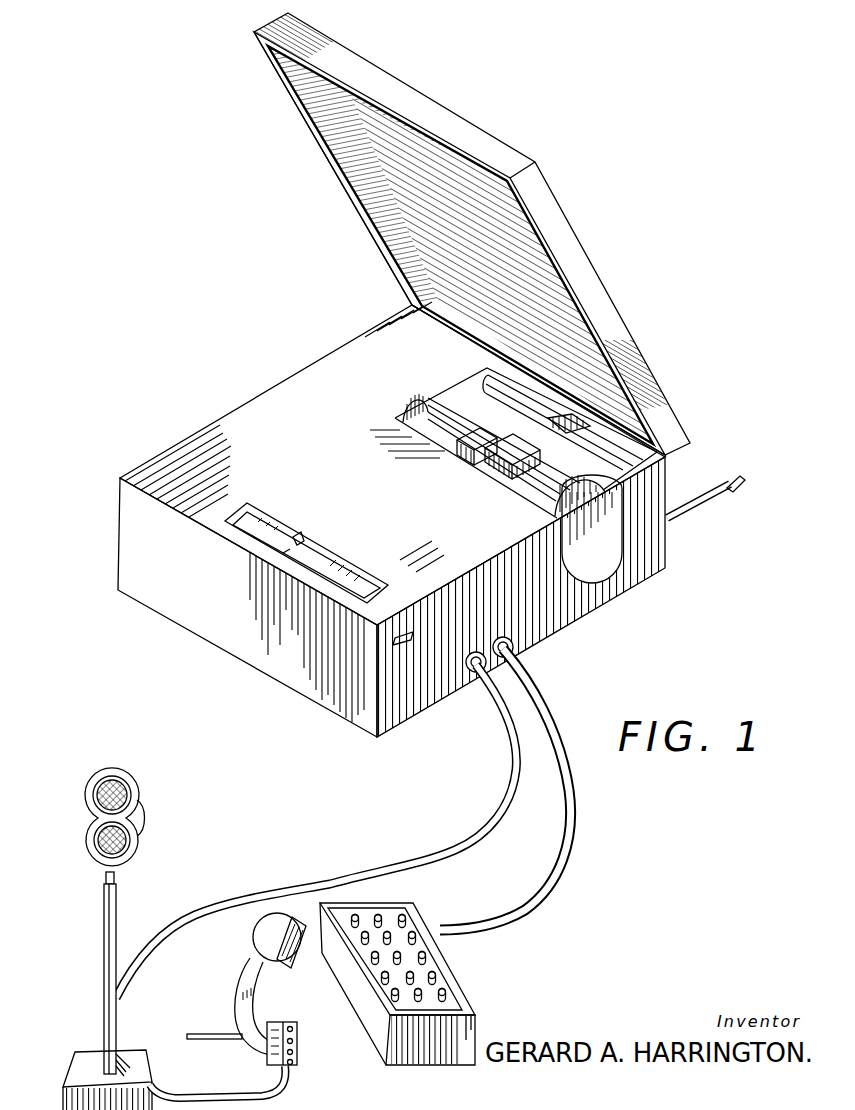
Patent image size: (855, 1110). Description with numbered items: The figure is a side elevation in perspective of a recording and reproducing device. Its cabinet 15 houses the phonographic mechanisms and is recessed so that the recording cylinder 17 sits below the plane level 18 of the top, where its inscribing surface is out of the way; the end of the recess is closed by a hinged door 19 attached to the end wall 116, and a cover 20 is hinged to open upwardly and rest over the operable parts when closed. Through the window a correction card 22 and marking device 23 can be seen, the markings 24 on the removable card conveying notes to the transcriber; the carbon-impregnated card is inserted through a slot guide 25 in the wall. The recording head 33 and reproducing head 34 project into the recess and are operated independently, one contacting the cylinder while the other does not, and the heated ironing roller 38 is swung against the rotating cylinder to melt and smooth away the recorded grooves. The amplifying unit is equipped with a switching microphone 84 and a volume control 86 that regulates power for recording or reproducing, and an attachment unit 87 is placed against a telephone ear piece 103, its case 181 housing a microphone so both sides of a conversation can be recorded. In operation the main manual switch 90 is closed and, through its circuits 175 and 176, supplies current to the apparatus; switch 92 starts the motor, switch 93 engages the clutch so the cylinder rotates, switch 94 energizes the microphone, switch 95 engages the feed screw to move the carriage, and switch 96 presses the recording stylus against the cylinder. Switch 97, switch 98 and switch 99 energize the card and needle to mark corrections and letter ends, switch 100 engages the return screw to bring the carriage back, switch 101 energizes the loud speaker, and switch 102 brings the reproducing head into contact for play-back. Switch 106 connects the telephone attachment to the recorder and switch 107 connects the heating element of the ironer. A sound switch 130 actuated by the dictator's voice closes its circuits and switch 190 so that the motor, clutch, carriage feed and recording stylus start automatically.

The cabinet 15 is at (140, 541).
The recording cylinder 17 is at (517, 429).
The plane level 18 is at (336, 358).
The hinged door 19 is at (618, 560).
The cover 20 is at (580, 252).
The correction card 22 is at (296, 553).
The marking device 23 is at (299, 538).
The markings 24 is at (283, 555).
The slot guide 25 is at (410, 634).
The recording head 33 is at (465, 447).
The reproducing head 34 is at (518, 460).
The ironing roller 38 is at (478, 372).
The switching microphone 84 is at (130, 843).
The volume control 86 is at (377, 917).
The attachment unit 87 is at (293, 1022).
The main manual switch 90 is at (100, 958).
The switch 92 is at (432, 928).
The switch 93 is at (418, 1000).
The switch 94 is at (408, 978).
The switch 95 is at (373, 953).
The switch 96 is at (393, 957).
The switch 97 is at (402, 915).
The switch 98 is at (388, 930).
The switch 99 is at (367, 930).
The switch 100 is at (412, 930).
The switch 101 is at (440, 980).
The switch 102 is at (423, 950).
The telephone ear piece 103 is at (272, 1060).
The switch 106 is at (357, 917).
The switch 107 is at (387, 977).
The end wall 116 is at (505, 609).
The sound switch 130 is at (119, 809).
The circuit 175 is at (723, 481).
The circuit 176 is at (737, 482).
The case 181 is at (228, 1005).
The switch 190 is at (391, 967).